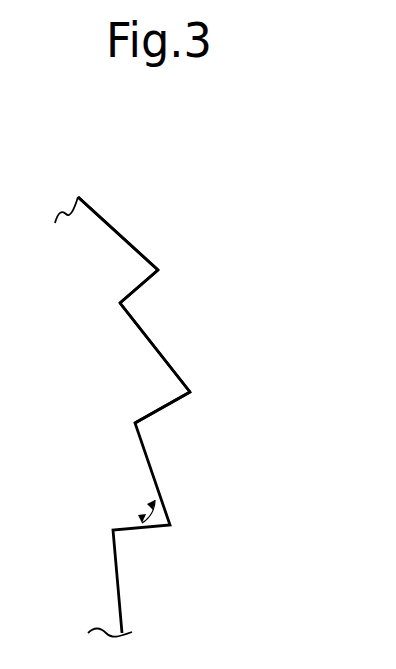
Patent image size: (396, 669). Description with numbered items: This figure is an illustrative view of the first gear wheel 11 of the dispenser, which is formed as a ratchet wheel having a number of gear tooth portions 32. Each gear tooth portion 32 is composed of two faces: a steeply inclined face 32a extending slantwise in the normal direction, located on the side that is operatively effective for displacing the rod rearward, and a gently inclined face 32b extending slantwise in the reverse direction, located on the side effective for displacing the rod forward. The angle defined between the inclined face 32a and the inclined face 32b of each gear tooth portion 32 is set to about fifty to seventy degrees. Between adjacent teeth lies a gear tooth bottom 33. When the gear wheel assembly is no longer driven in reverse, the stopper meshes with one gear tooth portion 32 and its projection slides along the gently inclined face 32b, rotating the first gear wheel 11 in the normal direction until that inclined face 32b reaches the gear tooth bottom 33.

The first gear wheel 11 is at (128, 233).
The gear tooth portion 32 is at (142, 262).
The steeply inclined face 32a is at (142, 423).
The gently inclined face 32b is at (167, 360).
The gear tooth bottom 33 is at (120, 305).